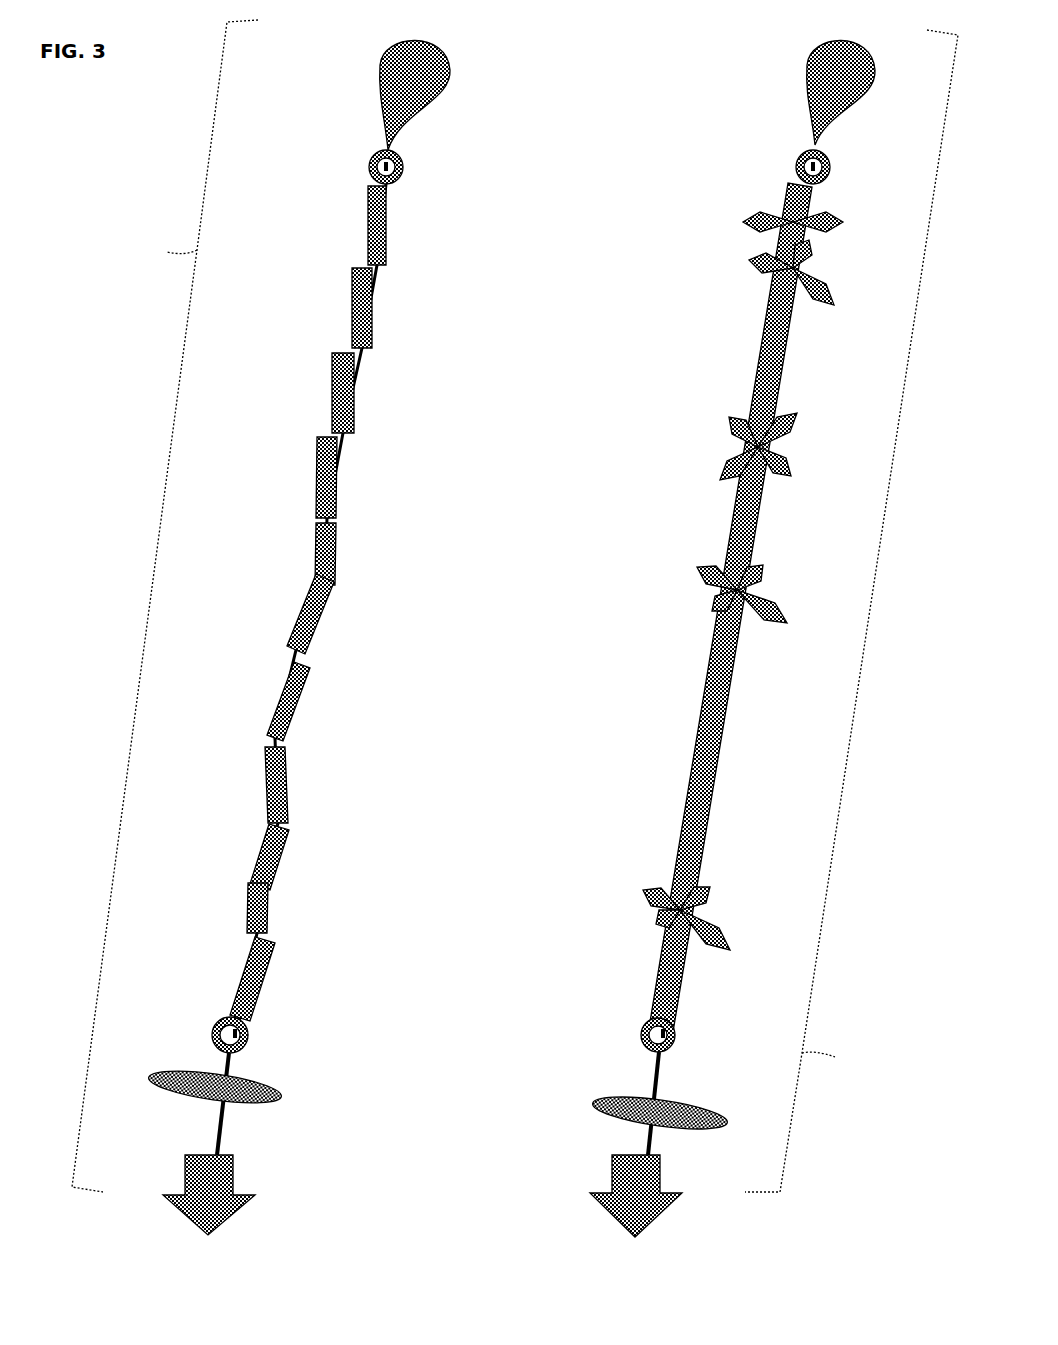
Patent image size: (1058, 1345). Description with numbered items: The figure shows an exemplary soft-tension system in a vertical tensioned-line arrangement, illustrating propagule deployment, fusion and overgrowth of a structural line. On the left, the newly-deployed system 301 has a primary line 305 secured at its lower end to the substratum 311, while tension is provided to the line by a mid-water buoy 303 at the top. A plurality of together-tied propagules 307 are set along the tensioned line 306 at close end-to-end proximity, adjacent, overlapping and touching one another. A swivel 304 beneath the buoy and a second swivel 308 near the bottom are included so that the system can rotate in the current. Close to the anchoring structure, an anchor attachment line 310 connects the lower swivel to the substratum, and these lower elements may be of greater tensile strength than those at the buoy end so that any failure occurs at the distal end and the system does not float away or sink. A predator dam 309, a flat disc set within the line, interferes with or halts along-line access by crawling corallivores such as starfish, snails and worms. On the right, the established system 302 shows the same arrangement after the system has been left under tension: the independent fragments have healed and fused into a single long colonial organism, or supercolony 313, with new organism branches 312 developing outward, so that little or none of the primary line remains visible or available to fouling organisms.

The newly-deployed system 301 is at (165, 606).
The established system 302 is at (851, 611).
The mid-water buoy 303 is at (458, 78).
The swivel 304 is at (403, 165).
The primary line 305 is at (380, 272).
The tensioned line 306 is at (356, 388).
The together-tied propagules 307 is at (296, 828).
The swivel 308 is at (249, 1035).
The predator dam 309 is at (284, 1093).
The anchor attachment line 310 is at (232, 1138).
The substratum 311 is at (257, 1190).
The new organism branches 312 is at (748, 247).
The supercolony 313 is at (698, 712).